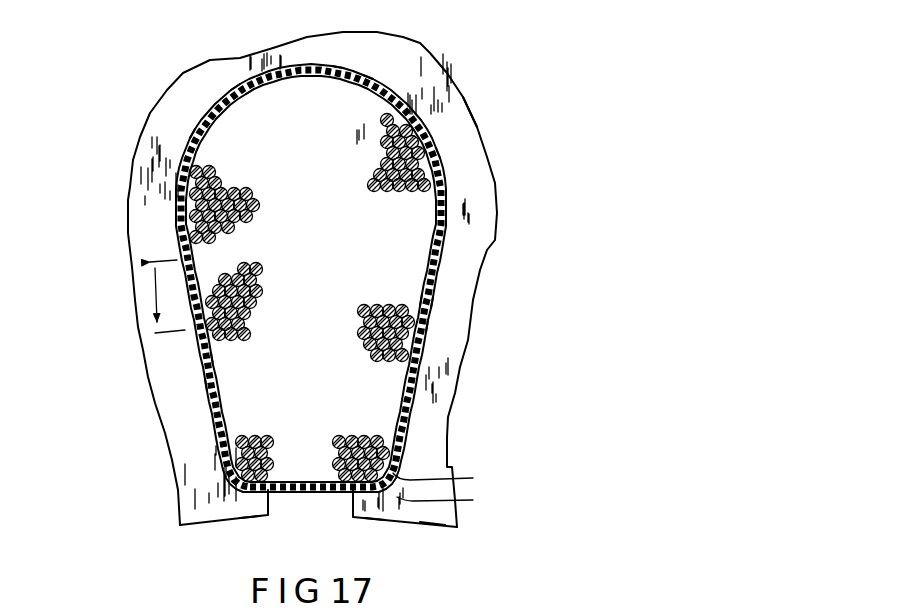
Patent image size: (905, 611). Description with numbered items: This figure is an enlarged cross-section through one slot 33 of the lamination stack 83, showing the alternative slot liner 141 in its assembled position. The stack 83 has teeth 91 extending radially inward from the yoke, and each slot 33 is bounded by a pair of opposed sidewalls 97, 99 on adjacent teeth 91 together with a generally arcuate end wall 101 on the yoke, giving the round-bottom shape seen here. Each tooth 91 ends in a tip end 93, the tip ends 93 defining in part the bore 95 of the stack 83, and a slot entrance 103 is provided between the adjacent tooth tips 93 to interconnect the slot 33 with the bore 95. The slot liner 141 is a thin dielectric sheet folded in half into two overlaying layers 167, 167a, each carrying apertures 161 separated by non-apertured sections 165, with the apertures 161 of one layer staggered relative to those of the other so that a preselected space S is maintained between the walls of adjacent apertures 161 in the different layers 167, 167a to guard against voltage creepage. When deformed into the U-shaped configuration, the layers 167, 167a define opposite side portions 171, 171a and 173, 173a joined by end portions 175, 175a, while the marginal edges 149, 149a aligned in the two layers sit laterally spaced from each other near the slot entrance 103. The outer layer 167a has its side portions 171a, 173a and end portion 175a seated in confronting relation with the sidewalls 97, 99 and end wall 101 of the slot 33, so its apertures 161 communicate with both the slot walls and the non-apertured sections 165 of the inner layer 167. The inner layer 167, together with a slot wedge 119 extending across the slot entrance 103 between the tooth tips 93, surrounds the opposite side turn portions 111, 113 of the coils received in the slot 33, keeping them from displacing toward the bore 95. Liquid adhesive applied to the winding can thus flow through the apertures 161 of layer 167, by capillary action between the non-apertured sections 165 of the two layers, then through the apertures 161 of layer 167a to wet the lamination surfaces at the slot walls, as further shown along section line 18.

The teeth 91 is at (468, 272).
The apertures 161 is at (298, 65).
The non-apertured sections 165 is at (198, 282).
The side turn portion 111 is at (352, 238).
The side turn portion 113 is at (386, 333).
The sidewall 97 is at (227, 433).
The marginal edge 149a is at (429, 463).
The marginal edge 149 is at (456, 500).
The overlaying layer 167a is at (240, 78).
The end portion 175a is at (338, 68).
The end wall 101 is at (368, 80).
The end portion 175 is at (312, 83).
The overlaying layer 167 is at (243, 93).
The side portion 171 is at (217, 363).
The side portion 171a is at (203, 382).
The side portion 173 is at (423, 307).
The side portion 173a is at (430, 307).
The sidewall 99 is at (423, 338).
The slot wedge 119 is at (292, 495).
The slot entrance 103 is at (353, 507).
The tip end 93 is at (250, 515).
The bore 95 is at (432, 523).
The section line 18- 18 is at (305, 5).
The slot 33 is at (182, 130).
The lamination stack 83 is at (530, 95).
The slot liner 141 is at (448, 150).
The preselected space S is at (157, 300).